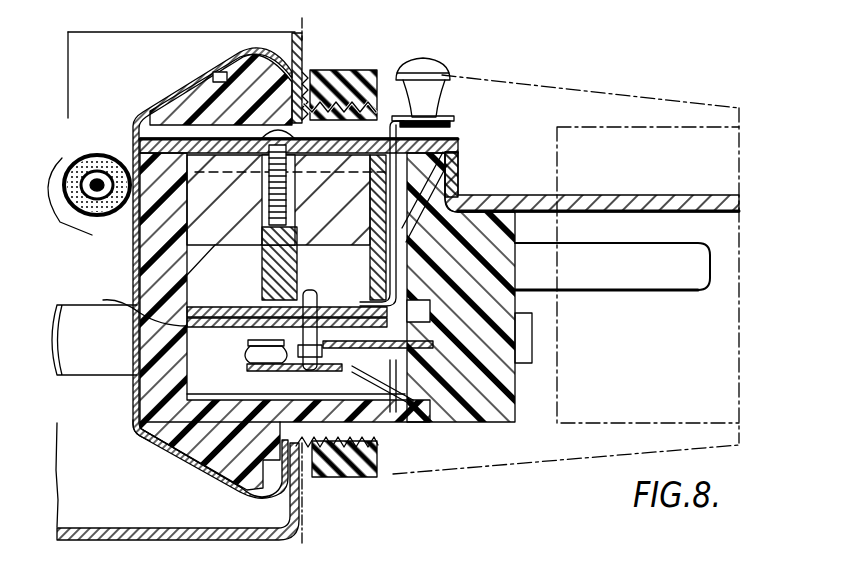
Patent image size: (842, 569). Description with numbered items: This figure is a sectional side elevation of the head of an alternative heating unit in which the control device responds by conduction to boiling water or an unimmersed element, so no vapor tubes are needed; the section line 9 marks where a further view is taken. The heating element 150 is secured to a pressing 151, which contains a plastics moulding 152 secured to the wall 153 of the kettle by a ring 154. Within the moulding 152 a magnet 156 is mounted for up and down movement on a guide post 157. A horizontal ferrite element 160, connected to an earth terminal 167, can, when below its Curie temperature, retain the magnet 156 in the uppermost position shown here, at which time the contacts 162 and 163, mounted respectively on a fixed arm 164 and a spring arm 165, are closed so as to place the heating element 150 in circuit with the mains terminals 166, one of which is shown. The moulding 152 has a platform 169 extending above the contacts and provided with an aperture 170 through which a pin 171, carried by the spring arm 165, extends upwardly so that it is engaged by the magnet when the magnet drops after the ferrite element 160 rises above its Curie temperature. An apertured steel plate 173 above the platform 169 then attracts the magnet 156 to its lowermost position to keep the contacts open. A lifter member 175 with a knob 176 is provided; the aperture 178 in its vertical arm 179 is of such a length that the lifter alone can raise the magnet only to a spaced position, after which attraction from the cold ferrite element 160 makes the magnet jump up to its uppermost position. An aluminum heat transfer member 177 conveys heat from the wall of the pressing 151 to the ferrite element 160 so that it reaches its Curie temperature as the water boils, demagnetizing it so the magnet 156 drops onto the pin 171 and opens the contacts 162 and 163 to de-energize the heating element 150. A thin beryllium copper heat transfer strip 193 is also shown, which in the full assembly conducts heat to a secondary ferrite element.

The section line 9- 9 is at (306, 27).
The heating element 150 is at (90, 345).
The pressing 151 is at (134, 433).
The plastics moulding 152 is at (197, 445).
The wall 153 is at (299, 52).
The ring 154 is at (343, 477).
The magnet 156 is at (350, 212).
The guide post 157 is at (288, 252).
The ferrite element 160 is at (202, 138).
The contact 162 is at (250, 352).
The contact 163 is at (250, 367).
The fixed arm 164 is at (397, 345).
The spring arm 165 is at (392, 420).
The mains terminal 166 is at (633, 277).
The earth terminal 167 is at (693, 198).
The platform 169 is at (137, 302).
The aperture 170 is at (320, 318).
The pin 171 is at (287, 252).
The apertured steel plate 173 is at (218, 320).
The lifter member 175 is at (446, 166).
The knob 176 is at (430, 62).
The aluminum heat transfer member 177 is at (133, 152).
The aperture 178 is at (437, 146).
The vertical arm 179 is at (446, 186).
The heat transfer strip 193 is at (190, 260).